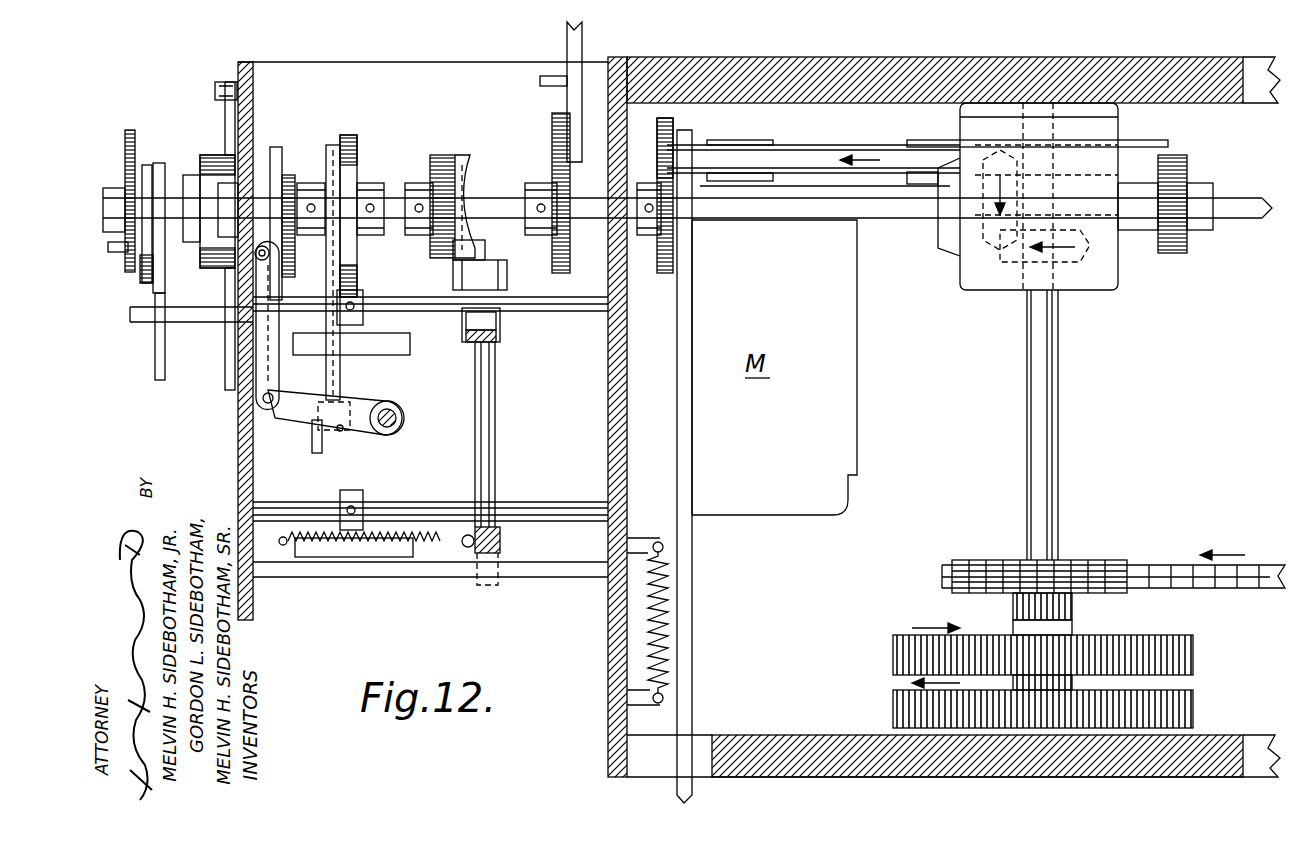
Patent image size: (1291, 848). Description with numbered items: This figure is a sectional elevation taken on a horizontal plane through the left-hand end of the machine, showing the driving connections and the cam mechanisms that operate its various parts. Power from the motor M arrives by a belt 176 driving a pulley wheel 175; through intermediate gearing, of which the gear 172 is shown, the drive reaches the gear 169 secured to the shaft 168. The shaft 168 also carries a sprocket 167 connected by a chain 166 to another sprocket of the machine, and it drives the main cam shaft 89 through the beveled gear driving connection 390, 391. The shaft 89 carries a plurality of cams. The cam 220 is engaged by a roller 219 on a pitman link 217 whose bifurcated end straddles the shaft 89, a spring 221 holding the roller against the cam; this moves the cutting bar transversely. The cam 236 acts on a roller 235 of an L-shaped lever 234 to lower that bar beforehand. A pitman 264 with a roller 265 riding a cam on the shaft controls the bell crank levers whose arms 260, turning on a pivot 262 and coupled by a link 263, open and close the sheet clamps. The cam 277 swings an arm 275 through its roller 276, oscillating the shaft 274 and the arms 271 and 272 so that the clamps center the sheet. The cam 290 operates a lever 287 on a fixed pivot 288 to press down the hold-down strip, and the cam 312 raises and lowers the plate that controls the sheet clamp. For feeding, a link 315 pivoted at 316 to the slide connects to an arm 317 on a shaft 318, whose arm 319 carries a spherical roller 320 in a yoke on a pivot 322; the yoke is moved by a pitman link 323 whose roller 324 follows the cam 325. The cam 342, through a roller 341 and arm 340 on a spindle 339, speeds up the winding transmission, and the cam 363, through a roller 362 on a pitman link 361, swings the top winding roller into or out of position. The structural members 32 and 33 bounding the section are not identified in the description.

The top frame plate 32 is at (820, 48).
The base plate 33 is at (750, 745).
The shaft 89 is at (395, 192).
The chain 166 is at (1188, 543).
The sprocket 167 is at (1118, 540).
The shaft 168 is at (1048, 457).
The gear 169 is at (893, 713).
The gear 172 is at (893, 657).
The pulley wheel 175 is at (1170, 123).
The belt 176 is at (813, 158).
The pitman link 217 is at (692, 303).
The roller 219 is at (662, 270).
The cam 220 is at (675, 122).
The spring 221 is at (670, 623).
The L-shaped lever 234 is at (585, 32).
The roller 235 is at (560, 147).
The cam 236 is at (555, 173).
The arm 260 is at (393, 343).
The pivot 262 is at (598, 312).
The link 263 is at (273, 468).
The pitman 264 is at (285, 178).
The roller 265 is at (295, 262).
The arm 271 is at (507, 333).
The arm 272 is at (495, 528).
The shaft 274 is at (492, 427).
The arm 275 is at (480, 273).
The roller 276 is at (480, 243).
The cam 277 is at (457, 177).
The lever 287 is at (254, 112).
The fixed pivot 288 is at (215, 93).
The cam 290 is at (218, 198).
The cam 312 is at (210, 158).
The link 315 is at (263, 372).
The pivot 316 is at (258, 254).
The arm 317 is at (350, 400).
The shaft 318 is at (400, 418).
The arm 319 is at (342, 432).
The spherical roller 320 is at (318, 433).
The pivot 322 is at (290, 423).
The pitman link 323 is at (345, 268).
The roller 324 is at (356, 284).
The cam 325 is at (358, 146).
The spindle 339 is at (152, 323).
The arm 340 is at (150, 296).
The roller 341 is at (125, 243).
The cam 342 is at (127, 130).
The pitman link 361 is at (158, 372).
The roller 362 is at (150, 272).
The cam 363 is at (148, 165).
The beveled gear 390 is at (1003, 275).
The beveled gear 391 is at (972, 253).